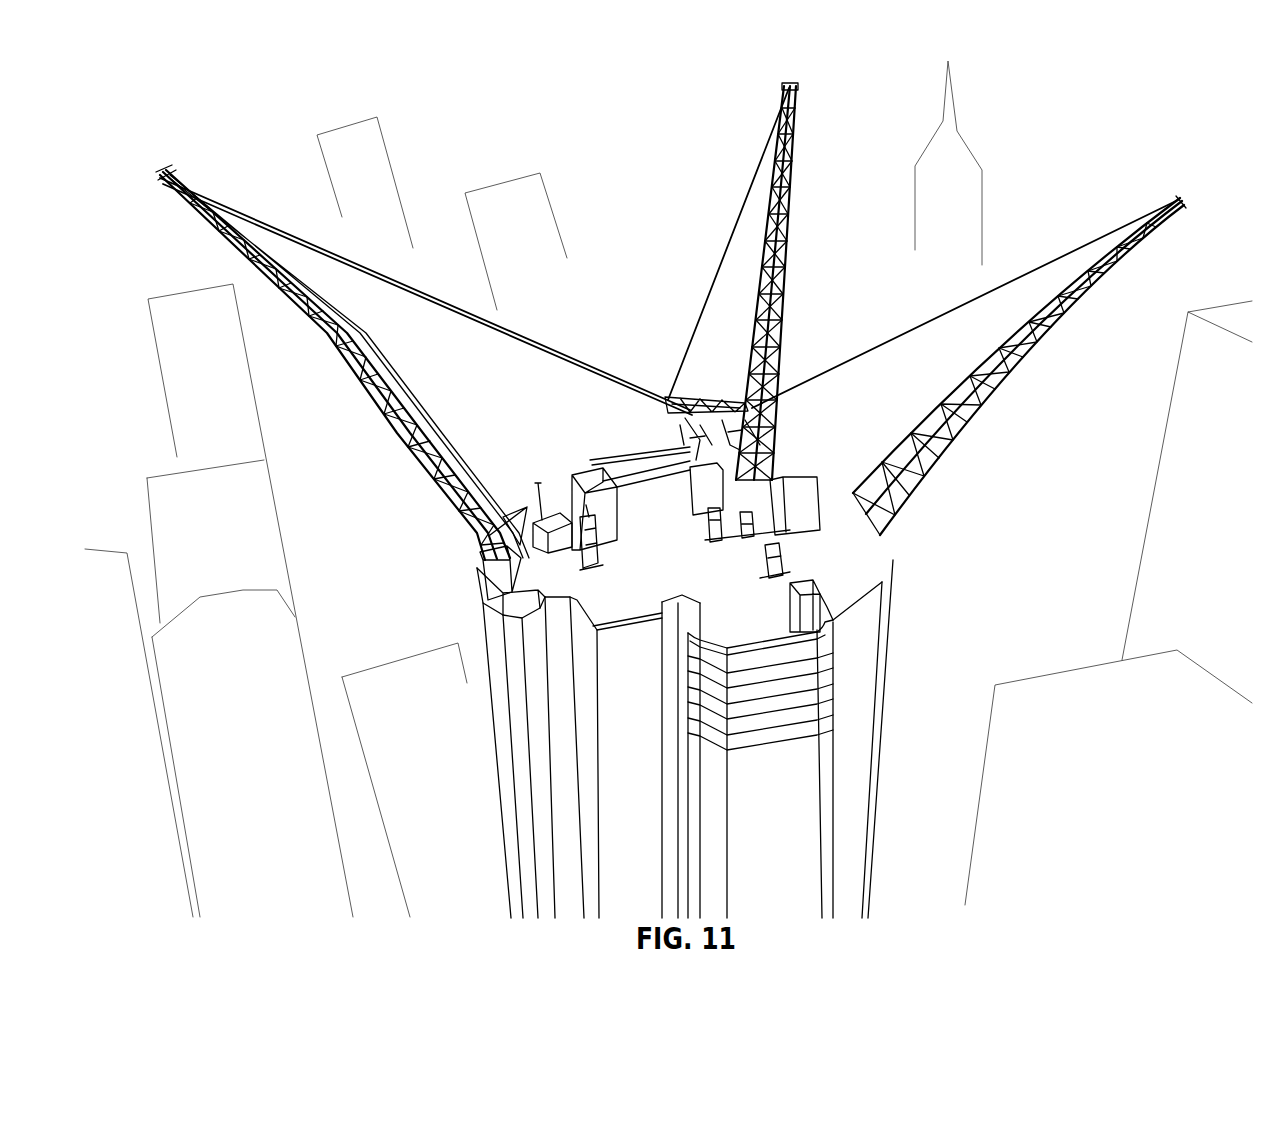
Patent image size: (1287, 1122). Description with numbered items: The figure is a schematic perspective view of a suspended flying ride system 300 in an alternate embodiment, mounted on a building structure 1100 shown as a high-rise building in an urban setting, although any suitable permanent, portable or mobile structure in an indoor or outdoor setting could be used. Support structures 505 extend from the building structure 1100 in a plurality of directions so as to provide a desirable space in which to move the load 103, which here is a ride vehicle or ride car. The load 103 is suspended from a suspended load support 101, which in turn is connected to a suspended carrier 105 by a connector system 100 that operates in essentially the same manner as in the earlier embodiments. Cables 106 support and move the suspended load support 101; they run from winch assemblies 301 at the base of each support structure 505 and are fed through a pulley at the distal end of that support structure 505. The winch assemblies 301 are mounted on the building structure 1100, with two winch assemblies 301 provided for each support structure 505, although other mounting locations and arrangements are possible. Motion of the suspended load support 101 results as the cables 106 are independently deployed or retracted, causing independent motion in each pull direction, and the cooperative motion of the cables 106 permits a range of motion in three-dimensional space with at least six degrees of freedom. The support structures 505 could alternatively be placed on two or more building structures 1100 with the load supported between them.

The suspended flying ride system 300 is at (599, 108).
The building structure 1100 is at (862, 625).
The support structure 505 is at (788, 223).
The cable 106 is at (760, 163).
The connector system 100 is at (718, 385).
The suspended carrier 105 is at (692, 397).
The load 103 is at (690, 432).
The suspended load support 101 is at (685, 452).
The winch assembly 301 is at (707, 530).